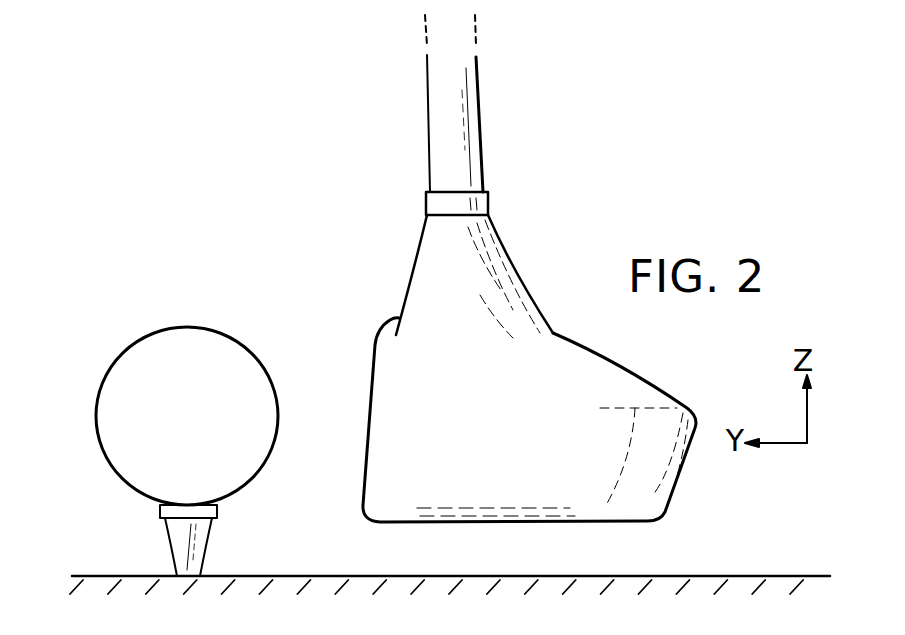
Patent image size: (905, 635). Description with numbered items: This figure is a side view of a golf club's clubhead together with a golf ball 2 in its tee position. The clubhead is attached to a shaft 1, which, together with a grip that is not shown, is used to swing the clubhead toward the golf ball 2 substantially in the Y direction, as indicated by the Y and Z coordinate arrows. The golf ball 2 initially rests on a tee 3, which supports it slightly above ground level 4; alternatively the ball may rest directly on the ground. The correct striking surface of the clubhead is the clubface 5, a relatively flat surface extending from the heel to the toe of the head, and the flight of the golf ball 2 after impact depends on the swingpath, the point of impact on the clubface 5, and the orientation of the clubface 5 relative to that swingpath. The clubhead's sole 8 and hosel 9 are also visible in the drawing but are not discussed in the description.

The shaft 1 is at (465, 130).
The golf ball 2 is at (173, 348).
The tee 3 is at (210, 535).
The ground level 4 is at (127, 575).
The clubface 5 is at (363, 408).
The sole 8 is at (470, 524).
The hosel 9 is at (400, 320).